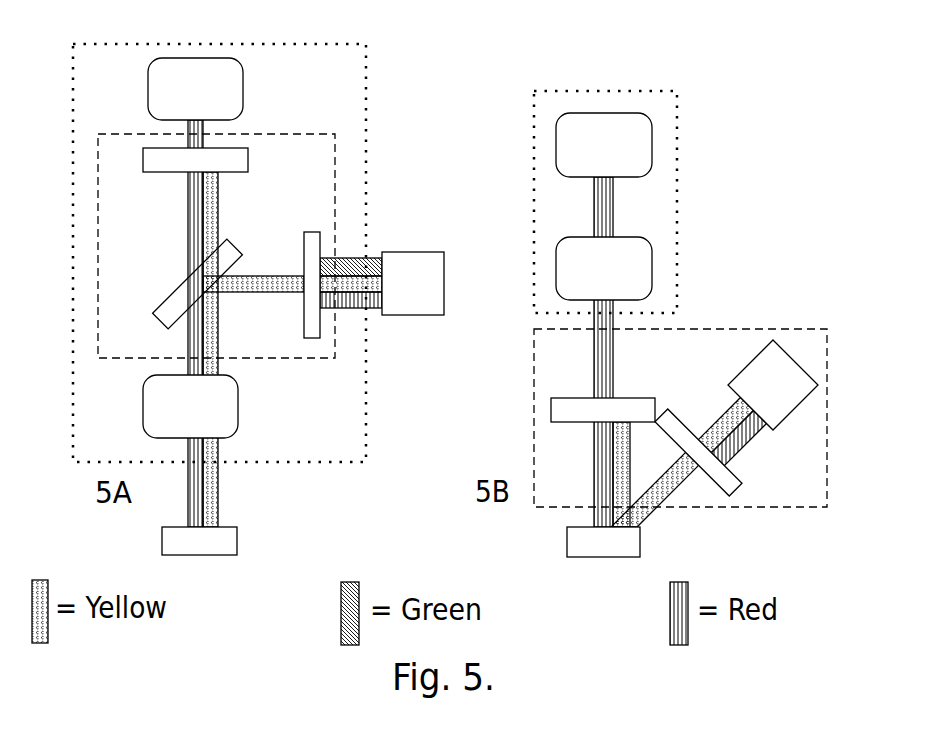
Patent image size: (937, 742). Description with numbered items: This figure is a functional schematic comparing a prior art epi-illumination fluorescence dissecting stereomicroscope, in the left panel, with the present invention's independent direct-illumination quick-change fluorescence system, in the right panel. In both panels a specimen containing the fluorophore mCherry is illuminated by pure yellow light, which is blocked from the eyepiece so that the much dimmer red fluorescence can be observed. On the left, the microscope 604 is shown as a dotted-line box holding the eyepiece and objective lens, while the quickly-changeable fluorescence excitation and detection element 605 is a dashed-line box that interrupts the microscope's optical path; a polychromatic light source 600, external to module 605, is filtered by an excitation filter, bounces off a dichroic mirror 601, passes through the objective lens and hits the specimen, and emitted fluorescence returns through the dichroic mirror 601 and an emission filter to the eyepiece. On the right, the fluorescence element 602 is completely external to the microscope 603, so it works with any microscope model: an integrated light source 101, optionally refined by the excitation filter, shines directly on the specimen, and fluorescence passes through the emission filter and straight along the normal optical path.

The integrated light source 101 is at (757, 393).
The detector 600 is at (397, 293).
The dichroic mirror 601 is at (172, 287).
The quickly-changeable fluorescence excitation and detection element 602 is at (762, 325).
The microscope 603 is at (682, 170).
The microscope 604 is at (368, 115).
The quickly-changeable fluorescence excitation and detection element 605 is at (268, 133).